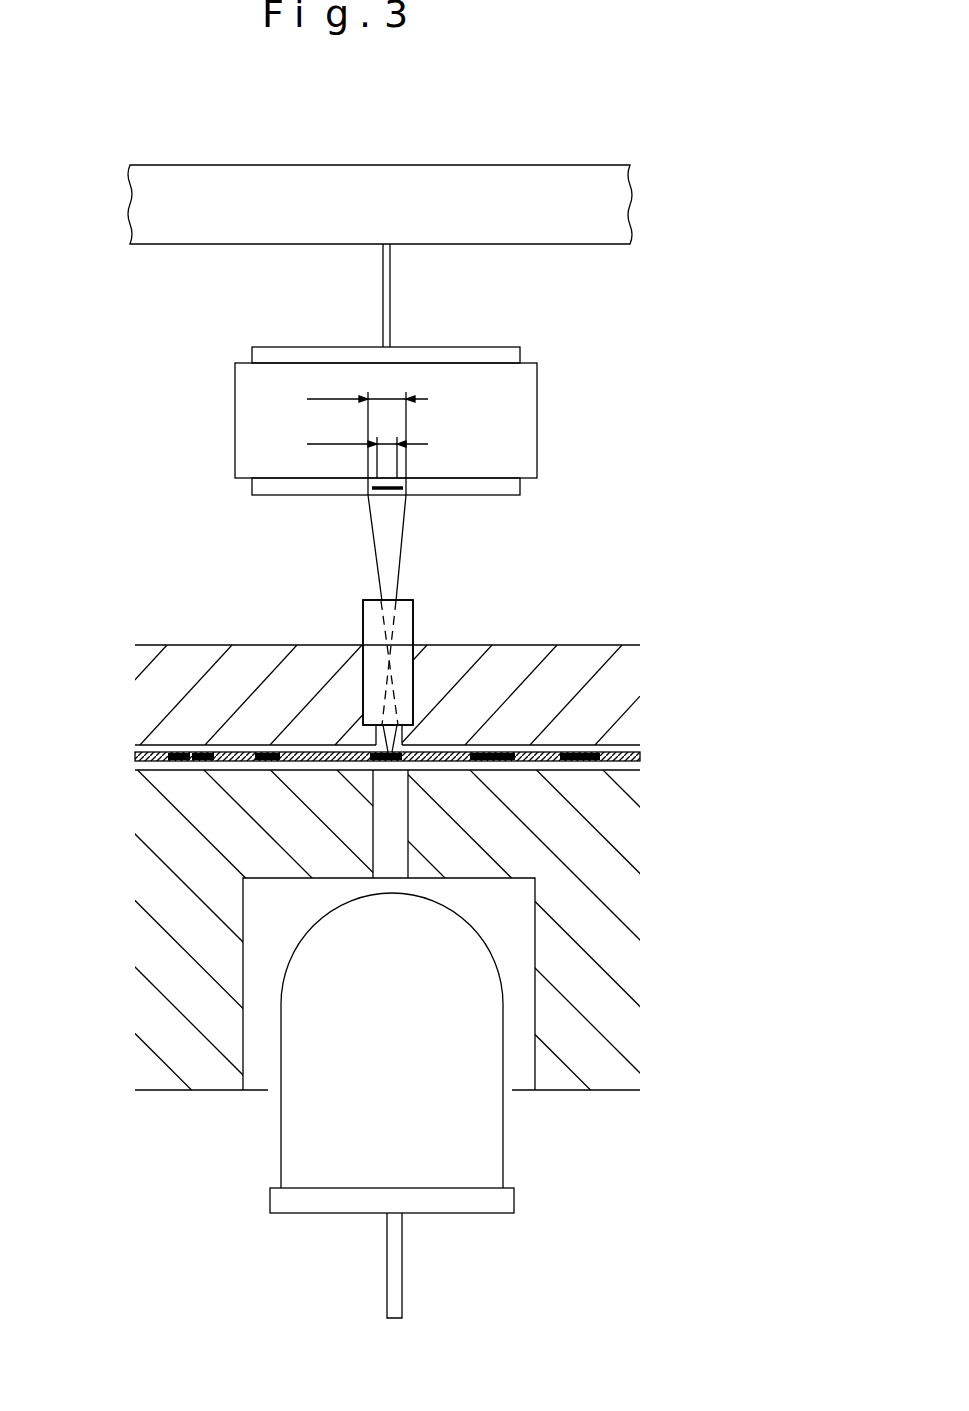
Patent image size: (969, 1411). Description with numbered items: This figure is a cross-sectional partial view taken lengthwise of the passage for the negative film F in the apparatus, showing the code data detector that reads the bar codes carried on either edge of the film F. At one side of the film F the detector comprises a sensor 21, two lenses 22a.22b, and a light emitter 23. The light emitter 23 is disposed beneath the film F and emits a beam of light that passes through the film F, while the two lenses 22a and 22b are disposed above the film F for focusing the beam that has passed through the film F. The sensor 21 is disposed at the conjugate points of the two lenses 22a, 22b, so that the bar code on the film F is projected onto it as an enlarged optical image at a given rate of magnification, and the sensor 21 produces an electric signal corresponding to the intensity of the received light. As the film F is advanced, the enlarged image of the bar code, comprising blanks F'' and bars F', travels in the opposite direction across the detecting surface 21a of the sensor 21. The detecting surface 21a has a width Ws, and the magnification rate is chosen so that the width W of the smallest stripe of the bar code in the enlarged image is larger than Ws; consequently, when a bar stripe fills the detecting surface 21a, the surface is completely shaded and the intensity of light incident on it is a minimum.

The sensor 21 is at (235, 393).
The detecting surface 21a is at (390, 487).
The two lenses 22a.22b is at (416, 622).
The lens 22a is at (416, 622).
The lens 22b is at (416, 622).
The light emitter 23 is at (293, 1147).
The negative film F is at (358, 783).
The bar F' is at (116, 677).
The blank F'' is at (151, 647).
The width of the smallest stripe W is at (367, 385).
The width of the detecting surface Ws is at (367, 430).